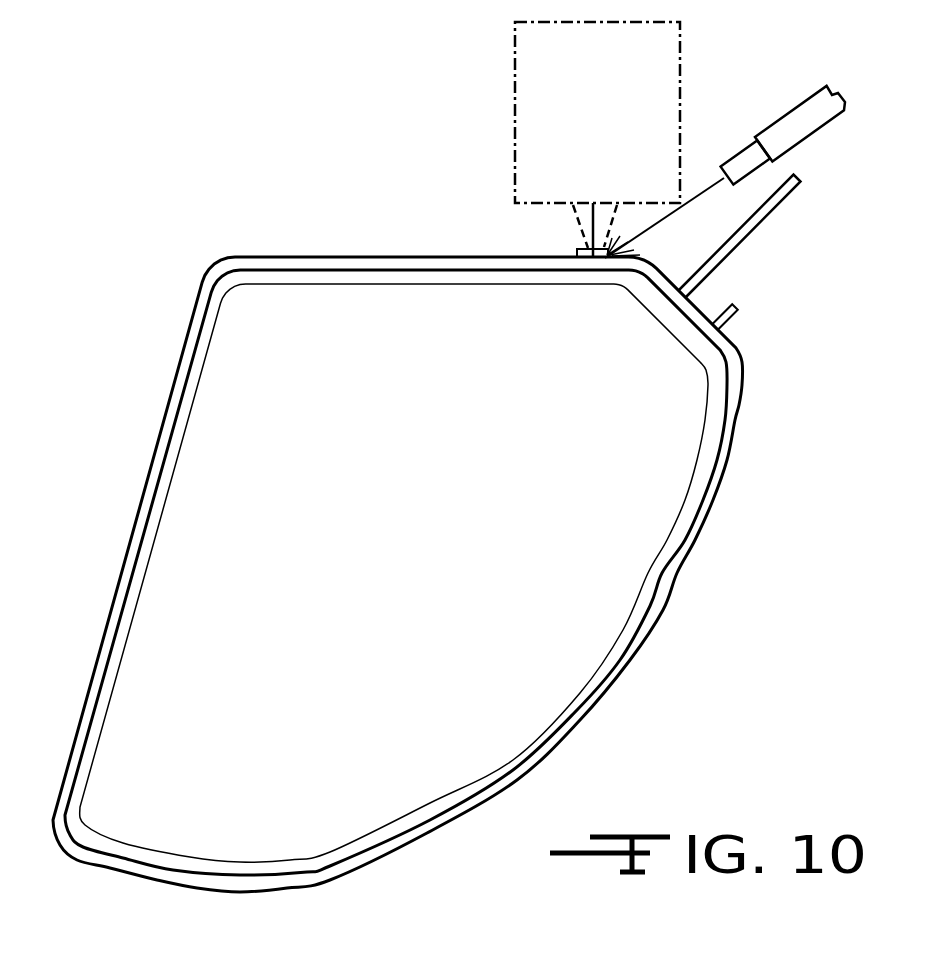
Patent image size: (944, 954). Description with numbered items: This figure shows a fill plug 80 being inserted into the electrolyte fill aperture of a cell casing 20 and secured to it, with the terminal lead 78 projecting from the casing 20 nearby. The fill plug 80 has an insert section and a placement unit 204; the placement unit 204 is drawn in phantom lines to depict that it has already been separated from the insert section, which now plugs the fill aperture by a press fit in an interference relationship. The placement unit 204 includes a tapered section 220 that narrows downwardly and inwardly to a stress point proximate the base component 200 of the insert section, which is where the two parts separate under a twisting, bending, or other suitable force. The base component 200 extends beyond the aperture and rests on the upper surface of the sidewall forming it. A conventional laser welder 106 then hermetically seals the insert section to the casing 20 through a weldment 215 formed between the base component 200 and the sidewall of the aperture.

The casing 20 is at (613, 713).
The terminal lead 78 is at (760, 222).
The fill plug 80 is at (573, 250).
The laser welder 106 is at (793, 109).
The base component 200 is at (593, 203).
The placement unit 204 is at (515, 43).
The weldment 215 is at (593, 258).
The tapered section 220 is at (577, 208).